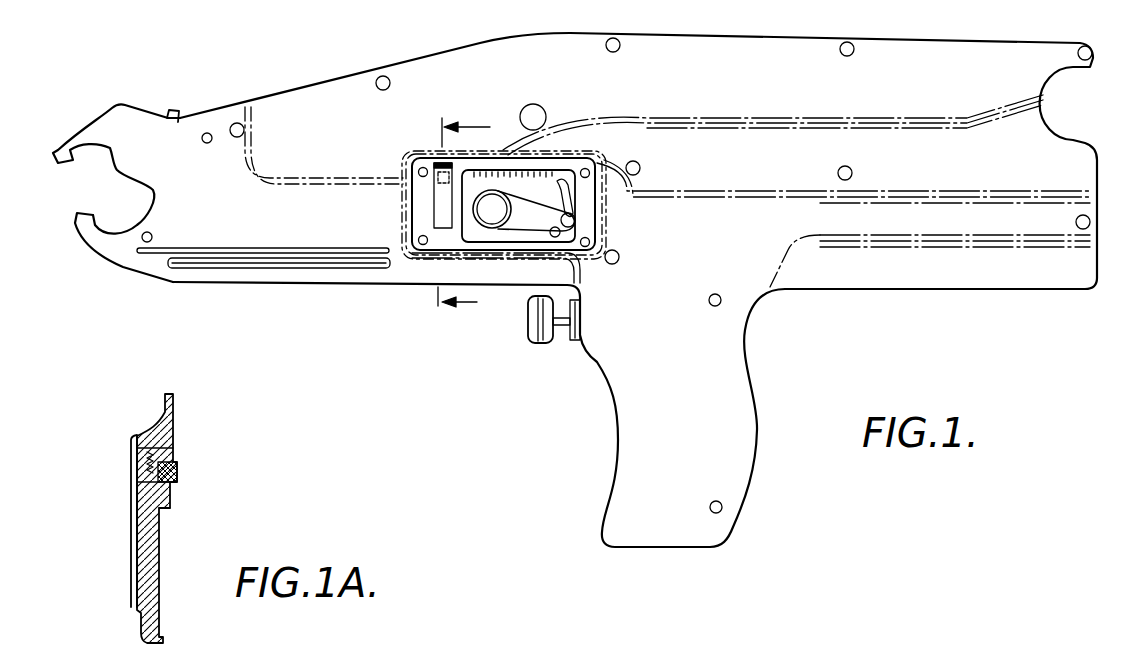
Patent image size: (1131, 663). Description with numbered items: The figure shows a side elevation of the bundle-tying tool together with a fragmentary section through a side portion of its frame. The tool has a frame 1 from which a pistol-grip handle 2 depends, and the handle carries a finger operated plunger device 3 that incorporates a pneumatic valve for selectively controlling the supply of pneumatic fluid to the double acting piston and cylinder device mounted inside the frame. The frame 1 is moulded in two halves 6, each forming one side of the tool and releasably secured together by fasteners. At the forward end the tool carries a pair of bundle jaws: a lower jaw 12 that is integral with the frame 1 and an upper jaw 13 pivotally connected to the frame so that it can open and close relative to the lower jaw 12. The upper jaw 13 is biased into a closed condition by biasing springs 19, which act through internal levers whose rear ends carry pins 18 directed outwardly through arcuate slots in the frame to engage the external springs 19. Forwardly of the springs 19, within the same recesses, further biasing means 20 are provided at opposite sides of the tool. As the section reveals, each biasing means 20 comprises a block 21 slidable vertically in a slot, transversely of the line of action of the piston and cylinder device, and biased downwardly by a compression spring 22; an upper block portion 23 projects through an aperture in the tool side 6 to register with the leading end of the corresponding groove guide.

In FIG. 1, the frame 1 is at (835, 292).
In FIG. 1, the pistol-grip handle 2 is at (755, 397).
In FIG. 1, the finger operated plunger device 3 is at (530, 343).
In FIG. 1, the frame halves 6 is at (963, 280).
In FIG. 1A, the frame halves 6 is at (133, 607).
In FIG. 1, the lower jaw 12 is at (95, 237).
In FIG. 1, the upper jaw 13 is at (90, 137).
In FIG. 1, the pins 18 is at (573, 210).
In FIG. 1, the biasing springs 19 is at (532, 237).
In FIG. 1, the further biasing means 20 is at (442, 223).
In FIG. 1A, the further biasing means 20 is at (140, 522).
In FIG. 1A, the block 21 is at (142, 495).
In FIG. 1A, the compression spring 22 is at (147, 458).
In FIG. 1A, the upper block portion 23 is at (173, 470).